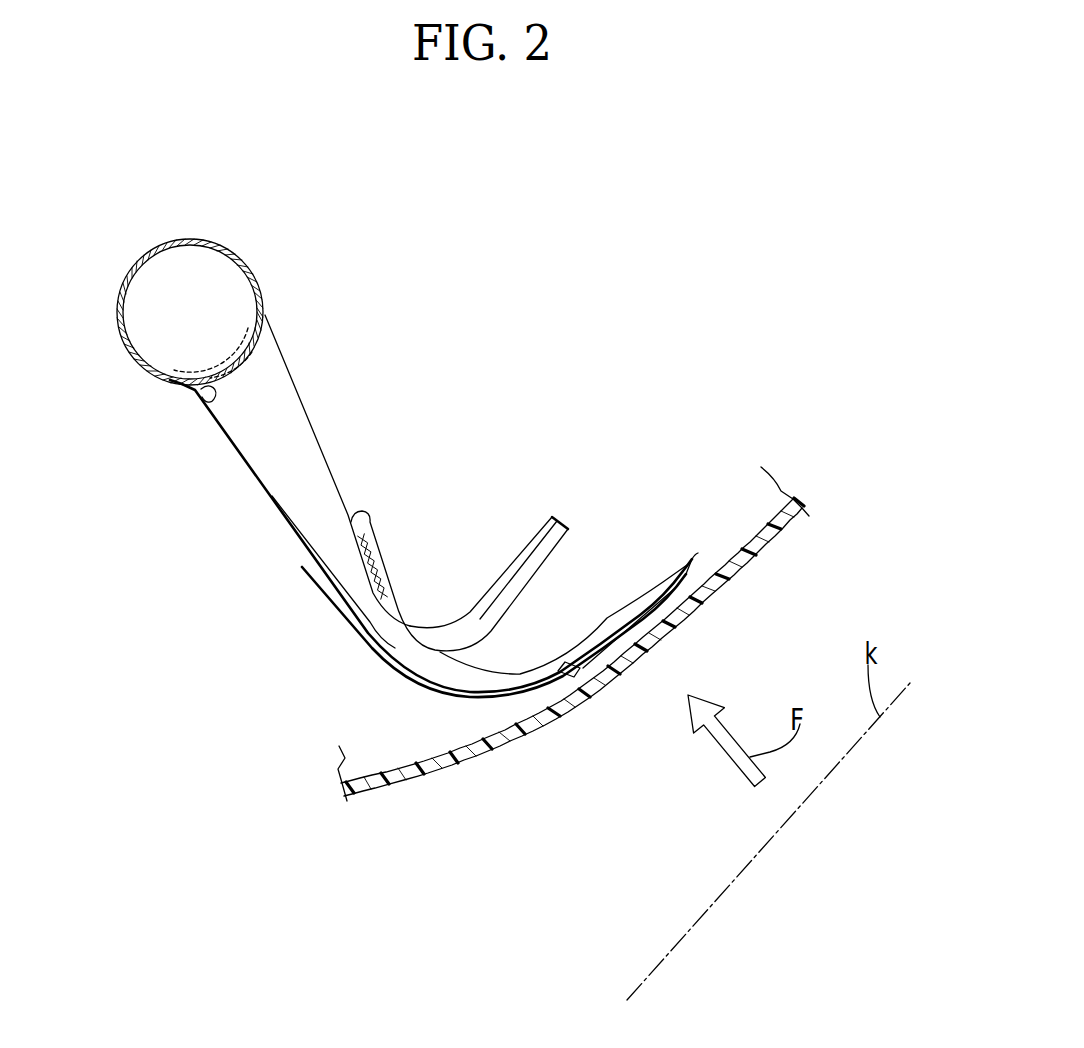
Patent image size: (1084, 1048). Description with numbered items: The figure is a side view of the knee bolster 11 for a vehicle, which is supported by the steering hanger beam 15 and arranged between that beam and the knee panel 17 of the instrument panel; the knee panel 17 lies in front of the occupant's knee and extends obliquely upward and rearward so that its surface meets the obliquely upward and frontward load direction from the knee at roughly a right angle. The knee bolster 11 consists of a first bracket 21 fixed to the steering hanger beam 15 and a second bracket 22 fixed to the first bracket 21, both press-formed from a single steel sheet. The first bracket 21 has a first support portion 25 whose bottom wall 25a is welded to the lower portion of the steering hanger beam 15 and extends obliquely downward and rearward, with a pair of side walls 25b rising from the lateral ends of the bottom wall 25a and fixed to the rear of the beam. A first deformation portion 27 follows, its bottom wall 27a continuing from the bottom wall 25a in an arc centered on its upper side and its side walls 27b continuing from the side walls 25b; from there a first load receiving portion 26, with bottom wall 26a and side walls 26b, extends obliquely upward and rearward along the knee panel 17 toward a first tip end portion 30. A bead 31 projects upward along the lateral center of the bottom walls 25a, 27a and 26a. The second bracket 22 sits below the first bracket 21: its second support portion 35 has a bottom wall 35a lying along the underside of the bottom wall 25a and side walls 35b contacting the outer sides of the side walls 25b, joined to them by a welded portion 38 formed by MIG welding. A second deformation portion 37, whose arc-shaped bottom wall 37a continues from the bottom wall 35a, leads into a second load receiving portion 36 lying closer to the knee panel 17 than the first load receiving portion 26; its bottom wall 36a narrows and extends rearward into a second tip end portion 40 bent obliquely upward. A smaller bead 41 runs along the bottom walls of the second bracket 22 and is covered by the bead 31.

The knee bolster 11 is at (463, 524).
The steering hanger beam 15 is at (190, 237).
The knee panel 17 is at (724, 588).
The first bracket 21 is at (431, 488).
The second bracket 22 is at (434, 607).
The first support portion 25 is at (431, 512).
The bottom wall 25a is at (247, 463).
The side walls 25b is at (313, 463).
The first load receiving portion 26 is at (562, 524).
The bottom wall 26a is at (517, 558).
The side walls 26b is at (541, 530).
The first deformation portion 27 is at (569, 657).
The bottom wall 27a is at (412, 638).
The side walls 27b is at (428, 625).
The first tip end portion 30 is at (549, 563).
The bead 31 is at (297, 510).
The second support portion 35 is at (434, 600).
The bottom wall 35a is at (320, 597).
The side walls 35b is at (387, 593).
The second load receiving portion 36 is at (608, 733).
The bottom wall 36a is at (565, 678).
The second deformation portion 37 is at (520, 792).
The bottom wall 37a is at (510, 699).
The welded portion 38 is at (353, 553).
The second tip end portion 40 is at (688, 570).
The bead 41 is at (617, 628).